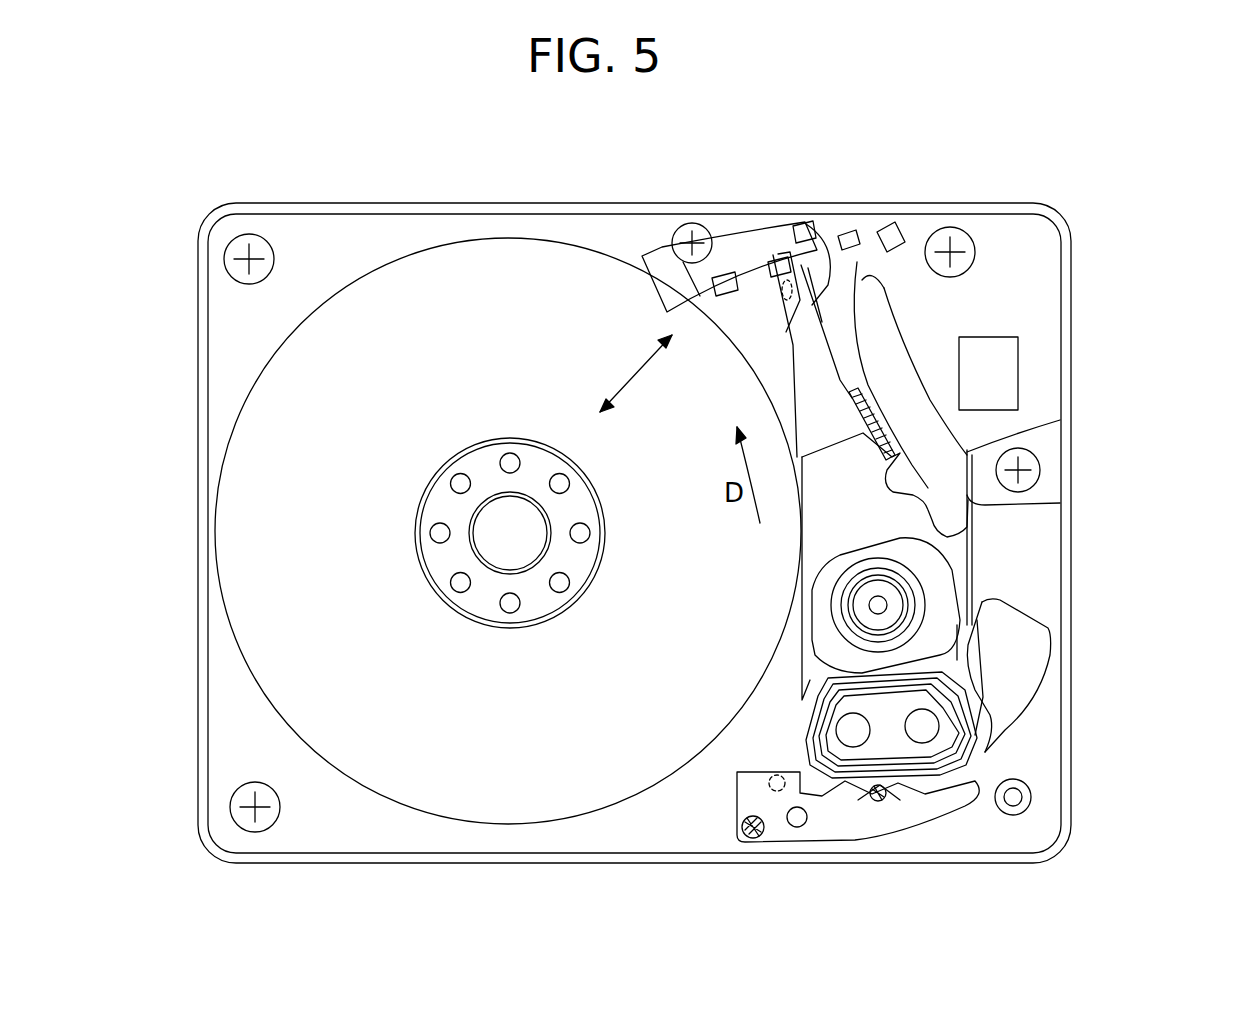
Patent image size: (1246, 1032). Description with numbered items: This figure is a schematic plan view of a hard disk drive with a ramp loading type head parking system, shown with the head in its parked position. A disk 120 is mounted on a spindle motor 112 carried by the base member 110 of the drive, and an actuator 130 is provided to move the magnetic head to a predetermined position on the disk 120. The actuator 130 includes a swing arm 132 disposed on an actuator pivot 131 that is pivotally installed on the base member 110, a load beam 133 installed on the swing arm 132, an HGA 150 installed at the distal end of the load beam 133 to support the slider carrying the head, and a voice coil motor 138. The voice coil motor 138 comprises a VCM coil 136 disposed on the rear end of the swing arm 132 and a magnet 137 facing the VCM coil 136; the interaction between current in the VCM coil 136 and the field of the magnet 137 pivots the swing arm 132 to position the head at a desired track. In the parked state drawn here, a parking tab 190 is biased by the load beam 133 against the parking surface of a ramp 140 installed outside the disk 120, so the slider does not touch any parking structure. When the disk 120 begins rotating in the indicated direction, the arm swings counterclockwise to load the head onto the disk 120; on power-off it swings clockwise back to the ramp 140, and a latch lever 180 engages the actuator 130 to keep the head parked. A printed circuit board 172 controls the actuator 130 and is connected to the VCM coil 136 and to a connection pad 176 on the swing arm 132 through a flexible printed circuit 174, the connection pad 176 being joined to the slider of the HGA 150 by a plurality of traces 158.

The base member 110 is at (618, 835).
The spindle motor 112 is at (443, 507).
The disk 120 is at (475, 262).
The actuator 130 is at (965, 548).
The actuator pivot 131 is at (878, 605).
The swing arm 132 is at (815, 520).
The load beam 133 is at (795, 327).
The VCM coil 136 is at (965, 720).
The magnet 137 is at (1025, 655).
The voice coil motor 138 is at (1158, 640).
The ramp 140 is at (735, 258).
The head gimbal assembly 150 is at (806, 290).
The traces 158 is at (880, 425).
The printed circuit board 172 is at (1040, 301).
The flexible printed circuit 174 is at (1060, 420).
The connection pad 176 is at (975, 500).
The latch lever 180 is at (830, 830).
The parking tab 190 is at (779, 262).